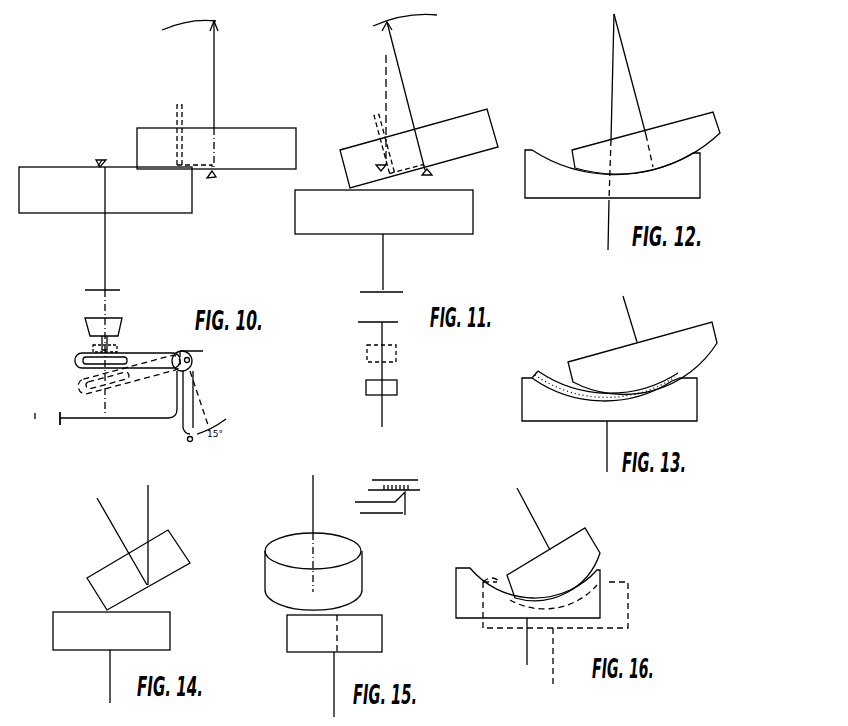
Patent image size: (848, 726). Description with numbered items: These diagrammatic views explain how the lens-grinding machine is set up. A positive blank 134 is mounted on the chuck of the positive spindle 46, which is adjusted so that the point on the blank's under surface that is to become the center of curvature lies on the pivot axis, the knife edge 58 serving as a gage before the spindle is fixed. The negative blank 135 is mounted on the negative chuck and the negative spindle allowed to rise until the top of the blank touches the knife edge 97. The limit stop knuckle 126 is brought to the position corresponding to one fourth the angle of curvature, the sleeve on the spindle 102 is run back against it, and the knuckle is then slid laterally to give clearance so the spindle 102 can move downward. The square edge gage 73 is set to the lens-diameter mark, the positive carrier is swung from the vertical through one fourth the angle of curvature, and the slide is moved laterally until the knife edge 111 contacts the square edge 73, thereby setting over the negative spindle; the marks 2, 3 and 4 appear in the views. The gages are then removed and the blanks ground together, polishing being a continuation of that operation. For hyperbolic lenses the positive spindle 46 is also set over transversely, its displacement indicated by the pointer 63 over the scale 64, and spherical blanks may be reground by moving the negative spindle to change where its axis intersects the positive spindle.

In FIG. 10, the position mark 2 is at (34, 409).
In FIG. 10, the position mark 3 is at (61, 412).
In FIG. 10, the position mark 4 is at (88, 418).
In FIG. 10, the positive spindle 46 is at (214, 75).
In FIG. 11, the positive spindle 46 is at (410, 93).
In FIG. 10, the knife edge 58 is at (214, 173).
In FIG. 11, the knife edge 58 is at (431, 172).
In FIG. 15, the pointer 63 is at (393, 509).
In FIG. 15, the scale 64 is at (390, 484).
In FIG. 10, the square edge gage 73 is at (178, 118).
In FIG. 11, the square edge gage 73 is at (399, 143).
In FIG. 10, the knife edge 97 is at (103, 161).
In FIG. 10, the spindle 102 is at (106, 248).
In FIG. 10, the knife edge 111 is at (98, 166).
In FIG. 11, the knife edge 111 is at (378, 169).
In FIG. 10, the limit stop knuckle 126 is at (118, 347).
In FIG. 10, the positive blank 134 is at (216, 148).
In FIG. 11, the positive blank 134 is at (419, 148).
In FIG. 12, the positive blank 134 is at (646, 143).
In FIG. 13, the positive blank 134 is at (642, 358).
In FIG. 14, the positive blank 134 is at (138, 570).
In FIG. 15, the positive blank 134 is at (313, 571).
In FIG. 16, the positive blank 134 is at (553, 564).
In FIG. 10, the negative blank 135 is at (105, 190).
In FIG. 11, the negative blank 135 is at (384, 212).
In FIG. 12, the negative blank 135 is at (612, 174).
In FIG. 13, the negative blank 135 is at (609, 399).
In FIG. 14, the negative blank 135 is at (111, 631).
In FIG. 15, the negative blank 135 is at (335, 633).
In FIG. 16, the negative blank 135 is at (528, 593).